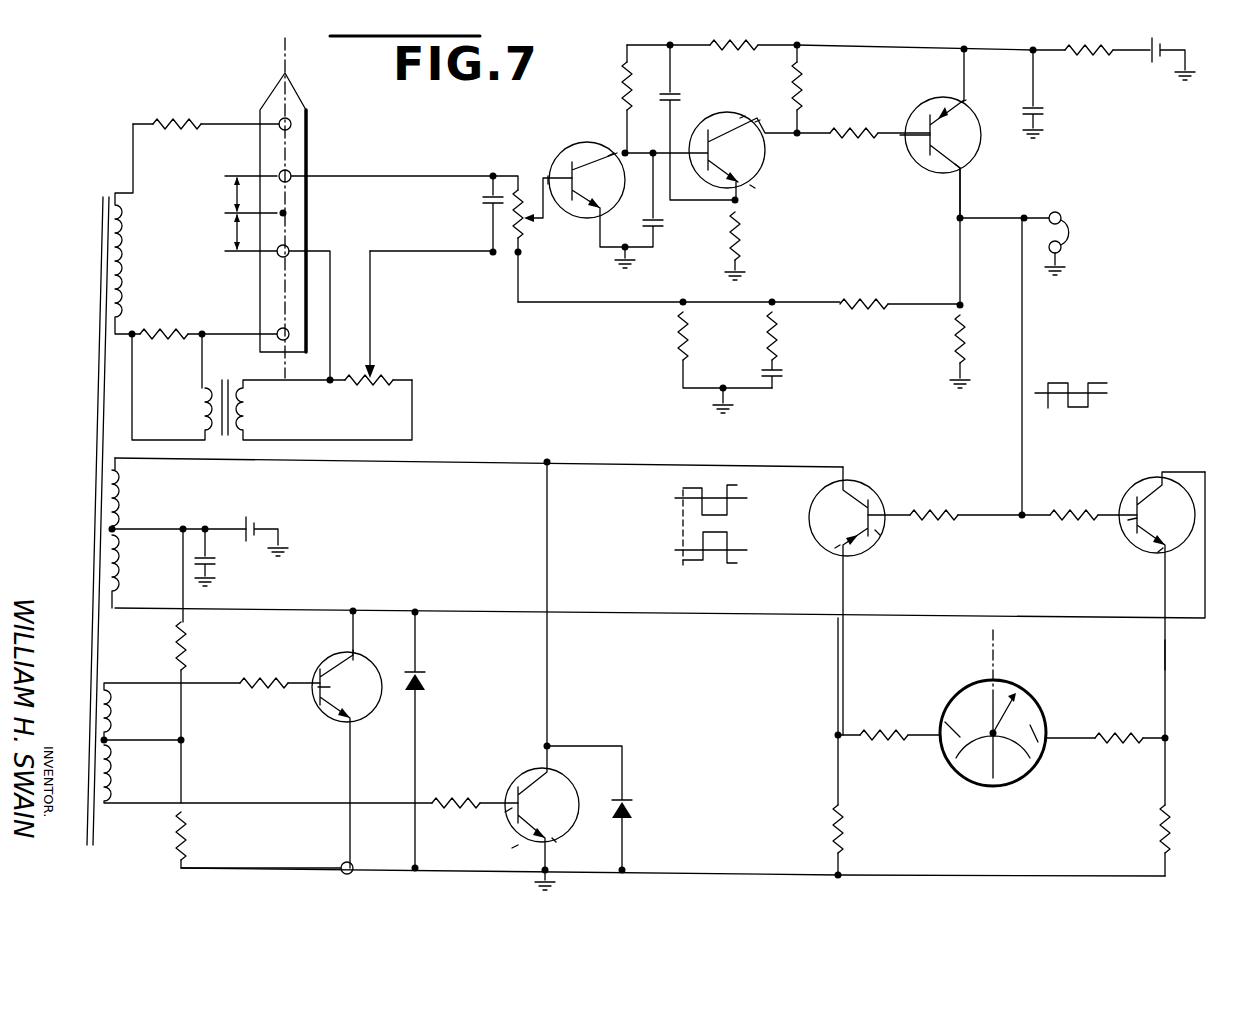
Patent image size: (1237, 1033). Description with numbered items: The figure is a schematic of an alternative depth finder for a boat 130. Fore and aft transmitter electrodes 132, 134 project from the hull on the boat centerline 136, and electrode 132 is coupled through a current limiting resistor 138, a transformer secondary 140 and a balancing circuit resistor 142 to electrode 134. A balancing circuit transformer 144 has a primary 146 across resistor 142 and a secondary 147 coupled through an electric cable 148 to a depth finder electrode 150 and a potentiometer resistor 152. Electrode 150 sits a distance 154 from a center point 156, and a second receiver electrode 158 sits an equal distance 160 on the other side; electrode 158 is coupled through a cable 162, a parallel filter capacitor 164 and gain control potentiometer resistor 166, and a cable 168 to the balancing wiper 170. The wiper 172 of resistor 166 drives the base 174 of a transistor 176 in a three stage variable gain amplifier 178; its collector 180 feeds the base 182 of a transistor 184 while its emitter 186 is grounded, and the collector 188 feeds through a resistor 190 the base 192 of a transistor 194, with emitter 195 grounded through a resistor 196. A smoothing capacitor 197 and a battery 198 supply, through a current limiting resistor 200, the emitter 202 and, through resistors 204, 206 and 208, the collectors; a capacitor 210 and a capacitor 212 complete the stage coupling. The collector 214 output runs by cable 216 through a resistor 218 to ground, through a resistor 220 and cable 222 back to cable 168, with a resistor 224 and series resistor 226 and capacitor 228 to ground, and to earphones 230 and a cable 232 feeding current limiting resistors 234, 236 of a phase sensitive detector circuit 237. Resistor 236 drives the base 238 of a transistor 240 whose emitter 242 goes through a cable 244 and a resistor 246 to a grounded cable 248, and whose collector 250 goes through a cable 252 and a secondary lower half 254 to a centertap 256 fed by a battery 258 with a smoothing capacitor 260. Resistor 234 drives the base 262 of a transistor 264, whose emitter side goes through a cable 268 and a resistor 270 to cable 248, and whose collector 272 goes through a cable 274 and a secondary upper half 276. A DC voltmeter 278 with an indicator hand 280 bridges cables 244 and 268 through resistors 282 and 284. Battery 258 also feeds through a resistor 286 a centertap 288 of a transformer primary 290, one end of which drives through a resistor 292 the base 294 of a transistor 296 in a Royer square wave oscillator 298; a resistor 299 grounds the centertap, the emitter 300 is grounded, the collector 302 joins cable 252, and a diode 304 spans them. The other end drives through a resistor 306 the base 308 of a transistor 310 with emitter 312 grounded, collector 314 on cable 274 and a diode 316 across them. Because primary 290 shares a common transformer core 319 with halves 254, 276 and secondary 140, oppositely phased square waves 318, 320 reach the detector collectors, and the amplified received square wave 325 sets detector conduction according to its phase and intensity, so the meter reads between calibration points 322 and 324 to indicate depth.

The boat 130 is at (308, 140).
The fore transmitter electrode 132 is at (291, 121).
The aft transmitter electrode 134 is at (277, 331).
The boat centerline 136 is at (285, 55).
The current limiting resistor 138 is at (172, 118).
The transformer secondary 140 is at (122, 237).
The balancing circuit resistor 142 is at (190, 309).
The balancing circuit transformer 144 is at (236, 384).
The primary 146 is at (203, 400).
The secondary 147 is at (252, 406).
The electric cable 148 is at (333, 264).
The depth finder electrode 150 is at (277, 254).
The potentiometer resistor 152 is at (378, 386).
The distance 154 is at (230, 232).
The center point 156 is at (290, 212).
The depth finder receiver electrode 158 is at (291, 173).
The distance 160 is at (226, 182).
The electric cable 162 is at (396, 176).
The filter capacitor 164 is at (482, 203).
The gain control potentiometer resistor 166 is at (513, 186).
The electric cable 168 is at (408, 258).
The adjustable balancing resistor wiper 170 is at (375, 362).
The adjustable wiper 172 is at (543, 275).
The base 174 is at (552, 176).
The transistor 176 is at (612, 156).
The three stage variable gain transistor amplifier 178 is at (852, 225).
The collector 180 is at (589, 194).
The base 182 is at (725, 148).
The transistor 184 is at (725, 112).
The emitter 186 is at (595, 210).
The collector 188 is at (738, 122).
The resistor 190 is at (880, 133).
The base 192 is at (928, 140).
The transistor 194 is at (965, 114).
The emitter 195 is at (755, 187).
The resistor 196 is at (748, 234).
The smoothing capacitor 197 is at (1045, 114).
The battery 198 is at (1150, 67).
The current limiting resistor 200 is at (1110, 57).
The emitter 202 is at (945, 112).
The resistor 204 is at (800, 97).
The resistor 206 is at (760, 44).
The resistor 208 is at (622, 92).
The high frequency attenuating capacitor 210 is at (658, 230).
The capacitor 212 is at (674, 94).
The collector 214 is at (965, 160).
The electric cable 216 is at (958, 242).
The resistor 218 is at (955, 337).
The resistor 220 is at (865, 304).
The electric cable 222 is at (582, 306).
The resistor 224 is at (683, 337).
The resistor 226 is at (780, 342).
The capacitor 228 is at (785, 374).
The earphones 230 is at (1056, 213).
The electric cable 232 is at (1024, 342).
The current limiting resistor 234 is at (935, 512).
The current limiting resistor 236 is at (1090, 510).
The phase sensitive detector circuit 237 is at (995, 588).
The base 238 is at (1128, 522).
The transistor 240 is at (1148, 487).
The emitter 242 is at (1158, 554).
The electric cable 244 is at (1170, 660).
The resistor 246 is at (1160, 832).
The grounded electric cable 248 is at (325, 868).
The collector 250 is at (1169, 514).
The electric cable 252 is at (615, 610).
The transformer secondary lower half 254 is at (137, 571).
The centertap 256 is at (122, 528).
The battery 258 is at (256, 518).
The smoothing capacitor 260 is at (220, 567).
The base 262 is at (875, 534).
The transistor 264 is at (835, 550).
The electric cable 268 is at (835, 657).
The resistor 270 is at (845, 830).
The collector 272 is at (855, 492).
The electric cable 274 is at (625, 472).
The transformer secondary upper half 276 is at (120, 480).
The DC voltmeter 278 is at (1040, 717).
The indicator hand 280 is at (1005, 702).
The resistor 282 is at (1118, 747).
The resistor 284 is at (878, 722).
The resistor 286 is at (184, 656).
The centertap 288 is at (268, 774).
The transformer primary 290 is at (172, 711).
The resistor 292 is at (278, 681).
The base 294 is at (318, 692).
The transistor 296 is at (355, 657).
The square wave oscillator 298 is at (470, 728).
The resistor 299 is at (185, 837).
The emitter 300 is at (345, 722).
The collector 302 is at (345, 654).
The diode 304 is at (418, 680).
The resistor 306 is at (446, 800).
The base 308 is at (505, 814).
The transistor 310 is at (512, 850).
The emitter 312 is at (552, 840).
The collector 314 is at (540, 782).
The diode 316 is at (636, 807).
The square wave oscillation 318 is at (697, 490).
The transformer core 319 is at (98, 318).
The square wave oscillation 320 is at (695, 565).
The full scale reading 322 is at (1045, 737).
The full scale reading 324 is at (955, 722).
The square wave 325 is at (1080, 374).